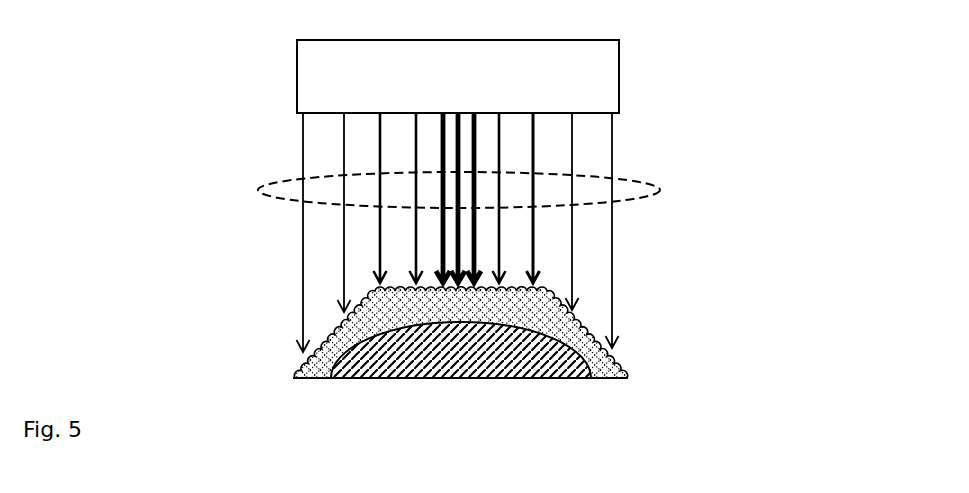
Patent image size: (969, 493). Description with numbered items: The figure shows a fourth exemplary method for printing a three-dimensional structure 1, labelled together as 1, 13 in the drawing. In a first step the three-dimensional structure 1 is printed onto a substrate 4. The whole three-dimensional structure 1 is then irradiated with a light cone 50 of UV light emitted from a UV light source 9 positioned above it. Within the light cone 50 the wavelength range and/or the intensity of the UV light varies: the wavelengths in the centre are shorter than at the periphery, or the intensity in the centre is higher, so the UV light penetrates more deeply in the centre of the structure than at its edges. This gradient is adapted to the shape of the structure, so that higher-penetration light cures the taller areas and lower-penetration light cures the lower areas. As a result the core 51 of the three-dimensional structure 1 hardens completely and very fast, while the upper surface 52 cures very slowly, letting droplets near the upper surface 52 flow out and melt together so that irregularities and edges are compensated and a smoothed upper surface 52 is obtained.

The UV light source 9 is at (598, 77).
The light cone 50 is at (643, 198).
The upper surface 52 is at (327, 347).
The core 51 is at (415, 378).
The substrate 4 is at (600, 379).
The three-dimensional structure 1 is at (558, 357).
The implant body 13 is at (558, 357).